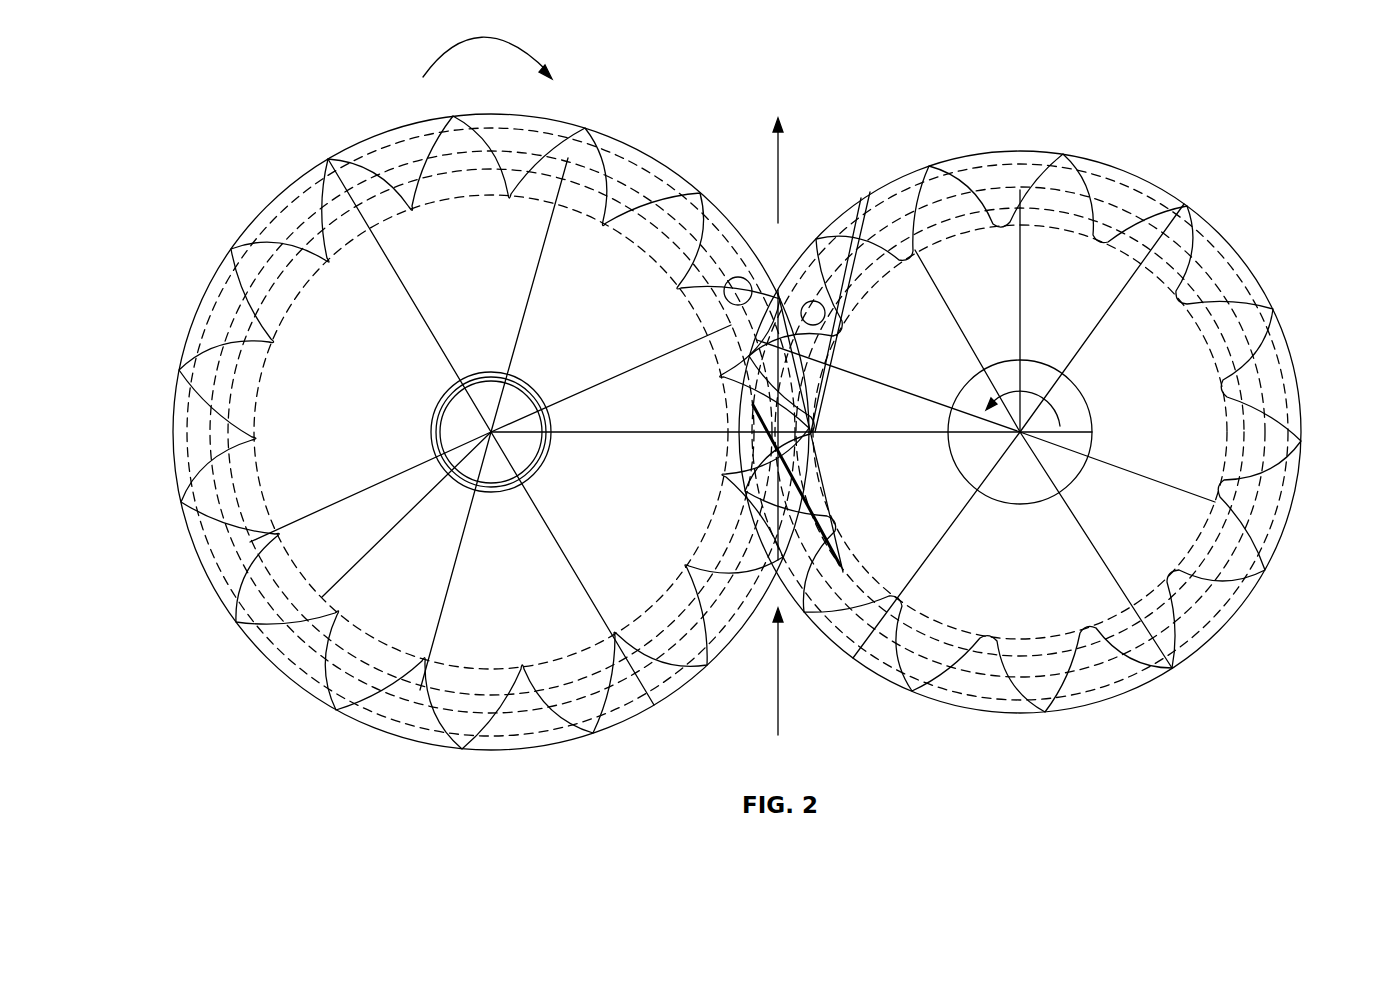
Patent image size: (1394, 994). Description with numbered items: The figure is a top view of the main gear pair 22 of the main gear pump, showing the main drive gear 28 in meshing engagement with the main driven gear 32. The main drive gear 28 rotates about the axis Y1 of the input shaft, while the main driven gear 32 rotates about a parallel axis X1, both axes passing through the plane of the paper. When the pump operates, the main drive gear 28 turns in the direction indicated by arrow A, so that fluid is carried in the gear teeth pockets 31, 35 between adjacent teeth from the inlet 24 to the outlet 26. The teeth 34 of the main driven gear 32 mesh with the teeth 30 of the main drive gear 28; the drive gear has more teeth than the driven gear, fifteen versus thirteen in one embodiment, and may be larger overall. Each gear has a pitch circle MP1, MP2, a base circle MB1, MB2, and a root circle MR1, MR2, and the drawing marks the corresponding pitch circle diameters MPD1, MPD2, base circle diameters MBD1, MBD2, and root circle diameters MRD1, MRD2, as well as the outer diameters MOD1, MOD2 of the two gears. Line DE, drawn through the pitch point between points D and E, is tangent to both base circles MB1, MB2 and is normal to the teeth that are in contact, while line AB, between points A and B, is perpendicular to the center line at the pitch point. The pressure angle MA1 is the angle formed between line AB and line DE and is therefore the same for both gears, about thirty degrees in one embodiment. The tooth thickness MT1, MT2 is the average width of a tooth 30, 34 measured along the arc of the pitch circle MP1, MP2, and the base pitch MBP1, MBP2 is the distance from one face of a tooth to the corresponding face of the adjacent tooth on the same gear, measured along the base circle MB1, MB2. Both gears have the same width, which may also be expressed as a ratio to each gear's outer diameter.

The main gear pair 22 is at (264, 740).
The main drive gear 28 is at (328, 200).
The teeth 30 is at (662, 150).
The gear teeth pockets 31 is at (500, 735).
The outlet 26 is at (778, 172).
The inlet 24 is at (778, 712).
The main driven gear 32 is at (1262, 290).
The teeth 34 is at (1040, 715).
The gear teeth pockets 35 is at (1022, 152).
The arrow indicating rotation direction A is at (605, 323).
The point of line AB B is at (757, 279).
The point of line DE D is at (778, 371).
The point of line DE E is at (814, 432).
The rotational axis of main drive gear Y1 is at (491, 432).
The rotational axis of main driven gear X1 is at (1020, 432).
The base circle of main drive gear MB1 is at (525, 165).
The pitch circle of main drive gear MP1 is at (380, 172).
The root circle of main drive gear MR1 is at (278, 247).
The base pitch of main drive gear MBP1 is at (247, 272).
The diameter of base circle of main drive gear MBD1 is at (215, 469).
The tooth thickness of main drive gear MT1 is at (220, 506).
The diameter of root circle of main drive gear MRD1 is at (250, 542).
The diameter of pitch circle of main drive gear MPD1 is at (433, 642).
The outer diameter of main drive gear MOD1 is at (655, 697).
The pressure angle MA1 is at (845, 550).
The base circle of main driven gear MB2 is at (1105, 697).
The pitch circle of main driven gear MP2 is at (877, 670).
The root circle of main driven gear MR2 is at (1255, 580).
The base pitch of main driven gear MBP2 is at (1282, 360).
The diameter of base circle of main driven gear MBD2 is at (870, 192).
The tooth thickness of main driven gear MT2 is at (1272, 318).
The diameter of root circle of main driven gear MRD2 is at (865, 372).
The diameter of pitch circle of main driven gear MPD2 is at (1012, 168).
The outer diameter of main driven gear MOD2 is at (1205, 222).